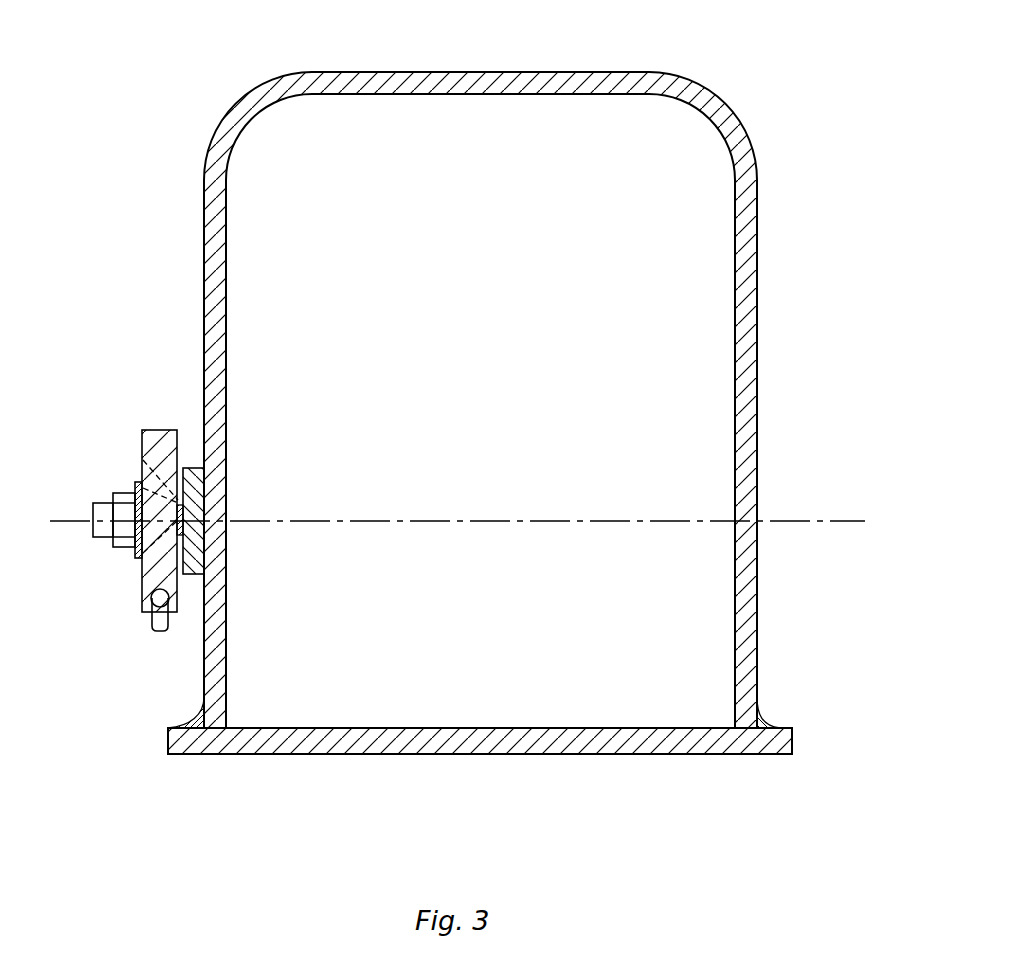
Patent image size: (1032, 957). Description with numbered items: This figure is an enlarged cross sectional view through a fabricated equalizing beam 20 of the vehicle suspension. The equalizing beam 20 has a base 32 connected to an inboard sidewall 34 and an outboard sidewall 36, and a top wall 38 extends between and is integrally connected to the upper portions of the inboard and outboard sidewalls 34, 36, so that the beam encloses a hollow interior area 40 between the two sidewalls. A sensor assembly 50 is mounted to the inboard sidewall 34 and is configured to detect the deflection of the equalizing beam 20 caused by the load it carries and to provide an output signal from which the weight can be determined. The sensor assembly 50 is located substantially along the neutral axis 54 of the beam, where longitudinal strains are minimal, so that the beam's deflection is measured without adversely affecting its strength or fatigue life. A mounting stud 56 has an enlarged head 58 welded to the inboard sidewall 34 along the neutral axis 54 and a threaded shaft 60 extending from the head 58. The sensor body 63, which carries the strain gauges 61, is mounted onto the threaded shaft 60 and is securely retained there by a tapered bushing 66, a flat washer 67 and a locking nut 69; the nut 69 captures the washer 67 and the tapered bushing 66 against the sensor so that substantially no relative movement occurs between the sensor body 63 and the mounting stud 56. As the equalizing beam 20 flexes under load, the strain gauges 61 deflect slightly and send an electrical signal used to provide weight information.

The equalizing beam 20 is at (513, 411).
The base 32 is at (415, 757).
The inboard sidewall 34 is at (217, 213).
The outboard sidewall 36 is at (757, 340).
The top wall 38 is at (440, 71).
The hollow interior area 40 is at (507, 183).
The sensor assembly 50 is at (164, 486).
The neutral axis 54 is at (826, 521).
The mounting stud 56 is at (216, 466).
The enlarged head 58 is at (205, 505).
The threaded shaft 60 is at (97, 507).
The strain gauge 61 is at (160, 533).
The sensor body 63 is at (163, 430).
The tapered bushing 66 is at (142, 462).
The flat washer 67 is at (140, 558).
The locking nut 69 is at (120, 550).